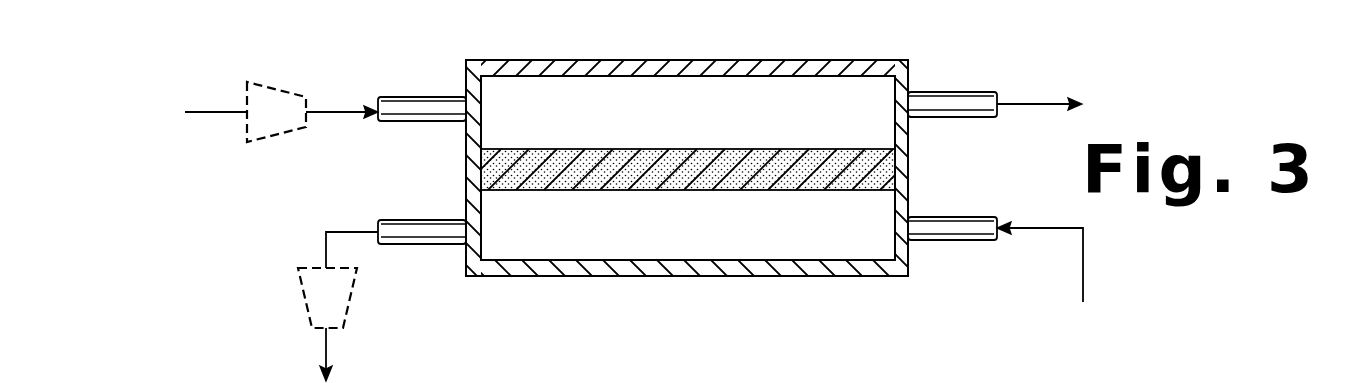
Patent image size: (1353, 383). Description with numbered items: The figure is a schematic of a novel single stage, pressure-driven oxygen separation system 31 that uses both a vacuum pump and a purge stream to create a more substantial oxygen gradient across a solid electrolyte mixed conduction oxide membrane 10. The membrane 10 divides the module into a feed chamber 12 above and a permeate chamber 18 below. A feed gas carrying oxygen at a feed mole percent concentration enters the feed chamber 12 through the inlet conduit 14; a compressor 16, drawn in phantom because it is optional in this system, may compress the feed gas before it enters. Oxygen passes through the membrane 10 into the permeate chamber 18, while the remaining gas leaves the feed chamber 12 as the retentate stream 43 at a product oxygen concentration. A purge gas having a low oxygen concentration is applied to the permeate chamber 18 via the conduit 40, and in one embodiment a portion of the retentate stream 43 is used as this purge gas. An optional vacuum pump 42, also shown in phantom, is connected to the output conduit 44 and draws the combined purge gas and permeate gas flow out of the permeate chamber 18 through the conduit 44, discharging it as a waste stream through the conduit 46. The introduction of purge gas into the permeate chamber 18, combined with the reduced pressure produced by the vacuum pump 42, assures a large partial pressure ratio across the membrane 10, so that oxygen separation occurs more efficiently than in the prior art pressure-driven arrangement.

The mixed conduction oxide membrane 10 is at (882, 163).
The feed chamber 12 is at (667, 92).
The inlet conduit 14 is at (418, 105).
The compressor 16 is at (272, 126).
The permeate chamber 18 is at (718, 242).
The system 31 is at (825, 51).
The conduit 40 is at (1083, 252).
The vacuum pump 42 is at (307, 304).
The retentate stream 43 is at (1057, 102).
The output conduit 44 is at (436, 231).
The conduit 46 is at (330, 352).